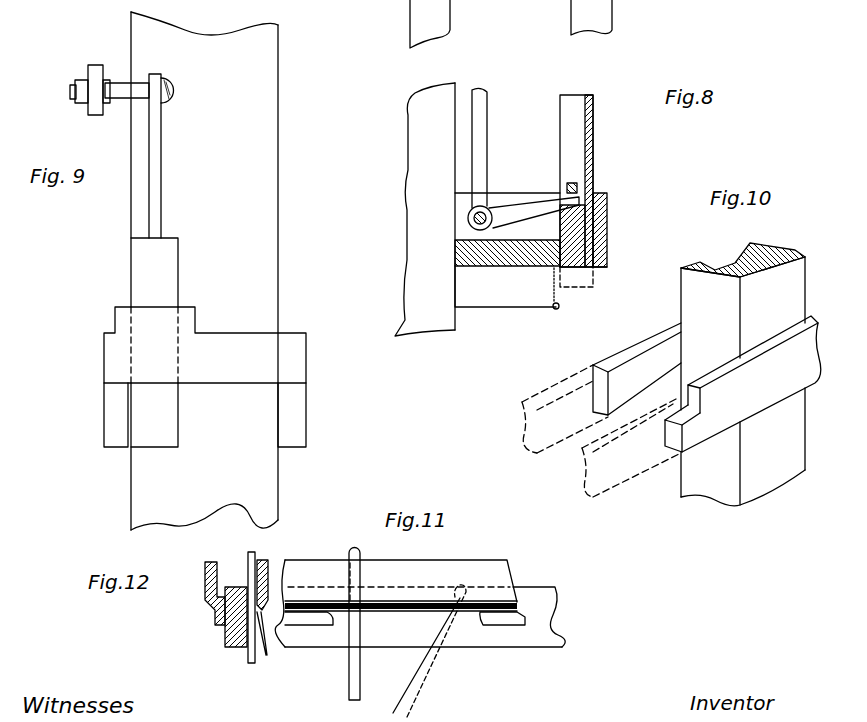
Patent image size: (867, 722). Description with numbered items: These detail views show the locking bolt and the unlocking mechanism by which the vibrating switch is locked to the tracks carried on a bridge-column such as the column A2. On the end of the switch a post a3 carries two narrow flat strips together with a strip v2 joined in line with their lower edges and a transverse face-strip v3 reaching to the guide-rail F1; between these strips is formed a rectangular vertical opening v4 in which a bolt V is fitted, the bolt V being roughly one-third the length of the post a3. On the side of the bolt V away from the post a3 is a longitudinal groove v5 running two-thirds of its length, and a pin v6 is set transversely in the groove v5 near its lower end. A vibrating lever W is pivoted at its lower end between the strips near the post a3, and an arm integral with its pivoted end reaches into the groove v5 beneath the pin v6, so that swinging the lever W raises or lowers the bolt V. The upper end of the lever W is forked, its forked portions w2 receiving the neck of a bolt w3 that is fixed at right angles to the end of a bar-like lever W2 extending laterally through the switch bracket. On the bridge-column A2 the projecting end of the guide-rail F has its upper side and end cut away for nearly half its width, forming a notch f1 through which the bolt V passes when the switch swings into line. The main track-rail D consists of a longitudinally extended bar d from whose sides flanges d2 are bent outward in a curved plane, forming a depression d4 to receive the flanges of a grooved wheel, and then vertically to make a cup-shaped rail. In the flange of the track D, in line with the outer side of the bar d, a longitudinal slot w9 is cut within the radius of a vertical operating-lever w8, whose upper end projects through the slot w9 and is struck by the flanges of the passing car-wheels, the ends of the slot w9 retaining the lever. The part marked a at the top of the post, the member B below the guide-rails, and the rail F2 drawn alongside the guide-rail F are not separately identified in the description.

In FIG. 9, the frame plate a is at (155, 53).
In FIG. 9, the post a3 is at (204, 271).
In FIG. 8, the post a3 is at (425, 209).
In FIG. 9, the vibrating lever W is at (162, 165).
In FIG. 8, the vibrating lever W is at (488, 140).
In FIG. 9, the lever W2 is at (95, 66).
In FIG. 9, the forked portions w2 is at (148, 100).
In FIG. 8, the forked portions w2 is at (509, 208).
In FIG. 9, the bolt w3 is at (101, 86).
In FIG. 9, the bolt V is at (178, 272).
In FIG. 8, the bolt V is at (595, 158).
In FIG. 8, the strip v2 is at (507, 250).
In FIG. 9, the face-strip v3 is at (205, 350).
In FIG. 8, the face-strip v3 is at (607, 222).
In FIG. 8, the rectangular vertical opening v4 is at (563, 305).
In FIG. 8, the longitudinal groove v5 is at (560, 160).
In FIG. 8, the pin v6 is at (565, 184).
In FIG. 9, the guide-rail F is at (104, 428).
In FIG. 10, the guide-rail F is at (701, 406).
In FIG. 8, the guide-rail F1 is at (505, 328).
In FIG. 9, the second bar F2 is at (310, 415).
In FIG. 10, the second bar F2 is at (590, 388).
In FIG. 10, the notch f1 is at (702, 403).
In FIG. 9, the beam B is at (154, 432).
In FIG. 10, the bridge-column A2 is at (743, 374).
In FIG. 11, the track-rail D is at (407, 581).
In FIG. 12, the track-rail D is at (239, 602).
In FIG. 11, the bar d is at (517, 647).
In FIG. 12, the bar d is at (230, 648).
In FIG. 11, the flange d2 is at (455, 558).
In FIG. 12, the flange d2 is at (205, 566).
In FIG. 12, the depression d4 is at (214, 614).
In FIG. 11, the operating-lever w8 is at (393, 632).
In FIG. 11, the longitudinal slot w9 is at (380, 605).
In FIG. 12, the longitudinal slot w9 is at (267, 643).